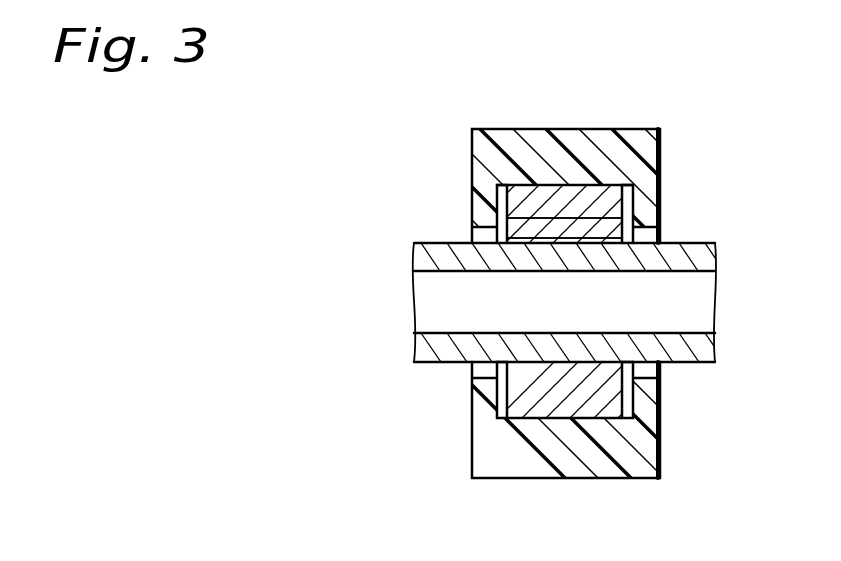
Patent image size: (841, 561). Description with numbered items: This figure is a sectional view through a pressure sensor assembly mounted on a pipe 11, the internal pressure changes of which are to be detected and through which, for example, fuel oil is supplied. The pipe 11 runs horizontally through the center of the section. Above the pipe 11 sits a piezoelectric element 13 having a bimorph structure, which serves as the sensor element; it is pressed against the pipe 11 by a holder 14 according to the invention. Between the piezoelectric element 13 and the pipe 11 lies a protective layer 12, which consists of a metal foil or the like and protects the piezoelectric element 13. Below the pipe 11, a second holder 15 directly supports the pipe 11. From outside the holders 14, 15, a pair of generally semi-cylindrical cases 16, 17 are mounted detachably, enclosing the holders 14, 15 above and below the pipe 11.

The pipe 11 is at (450, 353).
The protective layer 12 is at (658, 238).
The piezoelectric element 13 is at (603, 225).
The holder 14 is at (597, 198).
The holder 15 is at (532, 400).
The semi-cylindrical case 16 is at (543, 148).
The semi-cylindrical case 17 is at (603, 465).